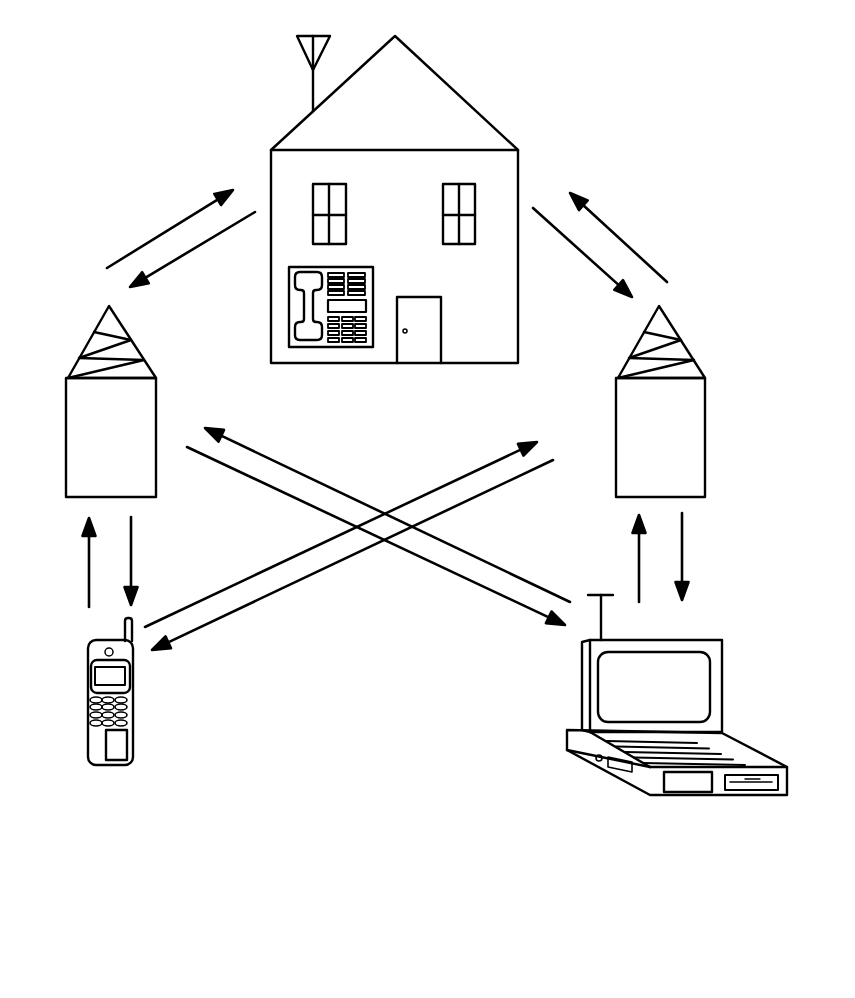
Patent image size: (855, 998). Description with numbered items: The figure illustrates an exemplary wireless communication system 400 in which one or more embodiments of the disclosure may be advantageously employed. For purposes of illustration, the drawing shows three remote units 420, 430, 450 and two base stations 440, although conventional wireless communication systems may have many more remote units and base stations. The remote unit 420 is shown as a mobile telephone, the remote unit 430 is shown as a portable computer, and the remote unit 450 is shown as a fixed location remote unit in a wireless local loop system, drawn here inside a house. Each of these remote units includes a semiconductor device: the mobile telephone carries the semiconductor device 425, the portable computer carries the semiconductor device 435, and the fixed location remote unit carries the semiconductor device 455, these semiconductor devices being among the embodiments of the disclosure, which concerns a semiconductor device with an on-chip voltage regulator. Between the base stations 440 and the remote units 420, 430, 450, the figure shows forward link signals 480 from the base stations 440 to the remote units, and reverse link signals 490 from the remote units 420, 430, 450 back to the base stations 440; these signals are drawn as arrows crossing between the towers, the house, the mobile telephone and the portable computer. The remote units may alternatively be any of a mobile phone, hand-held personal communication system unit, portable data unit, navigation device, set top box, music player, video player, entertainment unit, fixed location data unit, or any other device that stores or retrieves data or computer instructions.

The wireless communication system 400 is at (407, 493).
The remote unit 420 is at (92, 647).
The semiconductor device 425 is at (117, 750).
The remote unit 430 is at (702, 638).
The semiconductor device 435 is at (693, 783).
The base station 440 is at (88, 338).
The remote unit 450 is at (317, 346).
The semiconductor device 455 is at (354, 337).
The forward link signal 480 is at (173, 223).
The reverse link signal 490 is at (178, 255).